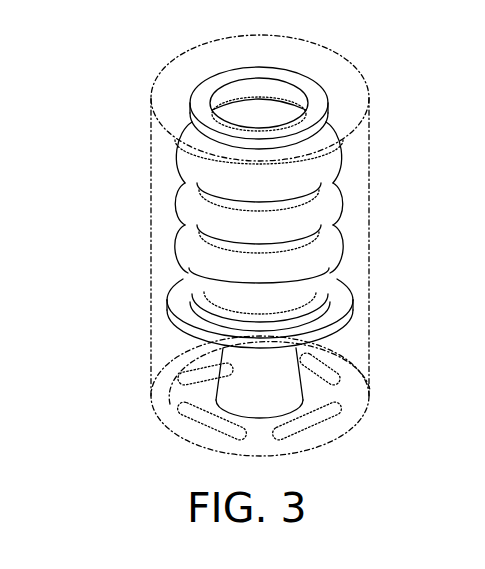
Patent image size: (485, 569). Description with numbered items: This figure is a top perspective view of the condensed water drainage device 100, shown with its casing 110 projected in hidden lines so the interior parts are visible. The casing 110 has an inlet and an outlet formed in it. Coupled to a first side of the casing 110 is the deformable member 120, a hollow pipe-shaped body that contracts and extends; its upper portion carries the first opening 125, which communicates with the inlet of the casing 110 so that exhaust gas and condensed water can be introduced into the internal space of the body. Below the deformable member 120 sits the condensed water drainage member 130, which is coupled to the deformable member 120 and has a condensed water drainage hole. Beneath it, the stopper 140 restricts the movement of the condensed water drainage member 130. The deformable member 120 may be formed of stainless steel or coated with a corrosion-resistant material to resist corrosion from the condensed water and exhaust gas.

The condensed water drainage device 100 is at (82, 38).
The casing 110 is at (150, 243).
The deformable member 120 is at (189, 197).
The first opening 125 is at (275, 82).
The condensed water drainage member 130 is at (180, 300).
The stopper 140 is at (233, 380).